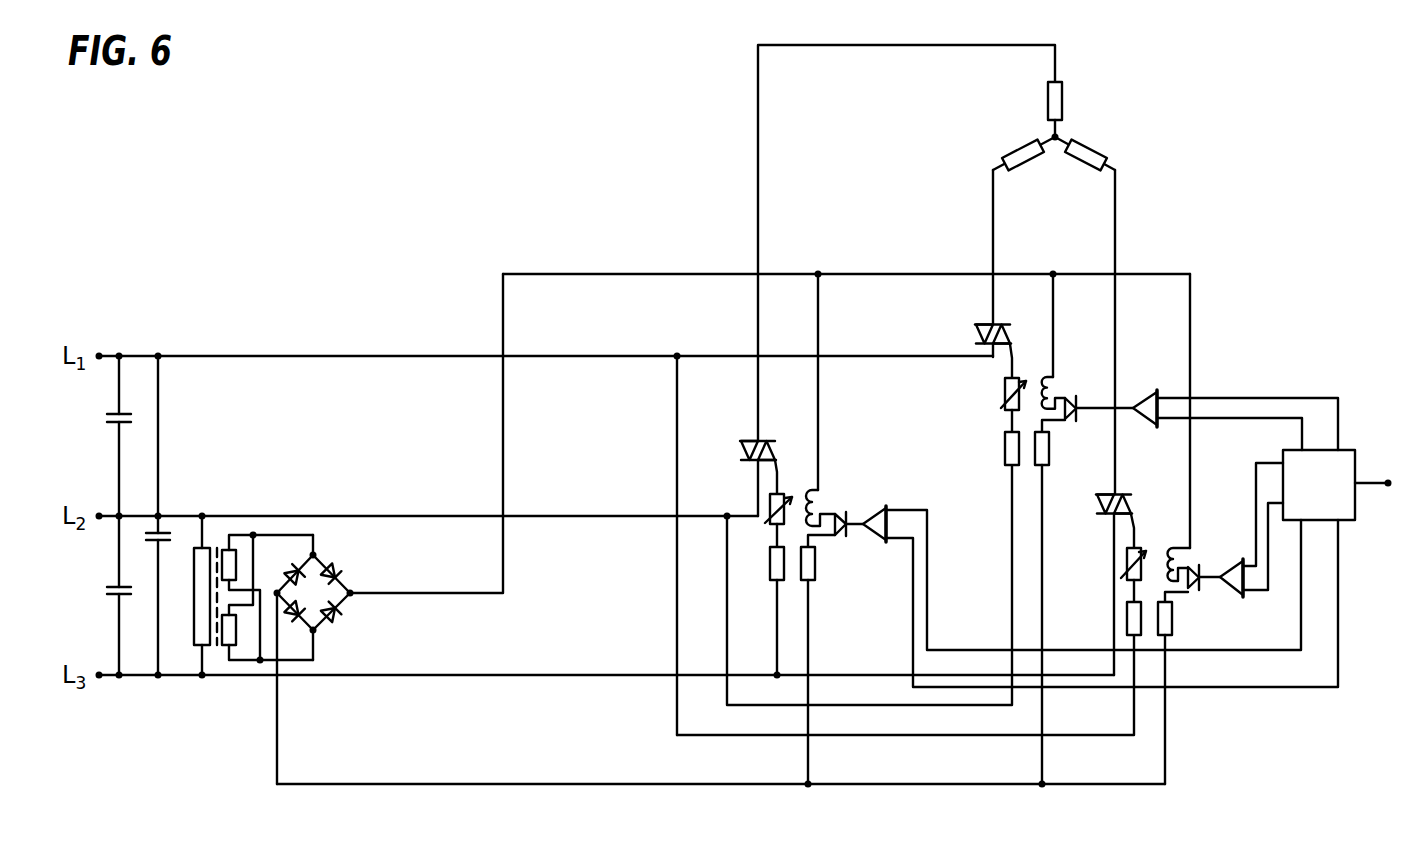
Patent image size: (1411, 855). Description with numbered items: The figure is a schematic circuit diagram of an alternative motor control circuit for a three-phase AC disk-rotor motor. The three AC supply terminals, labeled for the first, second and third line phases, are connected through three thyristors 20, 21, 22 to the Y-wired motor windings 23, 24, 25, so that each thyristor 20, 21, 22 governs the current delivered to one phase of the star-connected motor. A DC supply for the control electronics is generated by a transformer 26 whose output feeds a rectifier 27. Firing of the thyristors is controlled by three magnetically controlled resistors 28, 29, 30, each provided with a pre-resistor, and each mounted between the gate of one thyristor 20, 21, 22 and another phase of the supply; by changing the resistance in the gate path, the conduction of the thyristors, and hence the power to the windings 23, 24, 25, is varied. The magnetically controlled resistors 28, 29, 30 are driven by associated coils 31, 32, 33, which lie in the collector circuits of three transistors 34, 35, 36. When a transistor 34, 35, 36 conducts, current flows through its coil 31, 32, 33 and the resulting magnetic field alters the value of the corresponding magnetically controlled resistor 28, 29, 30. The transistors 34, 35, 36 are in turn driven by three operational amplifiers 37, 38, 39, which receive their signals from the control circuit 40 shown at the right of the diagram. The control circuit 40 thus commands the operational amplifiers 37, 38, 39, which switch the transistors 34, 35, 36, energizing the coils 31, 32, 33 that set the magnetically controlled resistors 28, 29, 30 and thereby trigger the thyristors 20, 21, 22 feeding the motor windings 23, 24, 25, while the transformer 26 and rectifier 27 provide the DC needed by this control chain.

The thyristor 20 is at (752, 438).
The thyristor 21 is at (987, 323).
The thyristor 22 is at (1120, 495).
The winding 23 is at (1020, 145).
The winding 24 is at (1063, 105).
The winding 25 is at (1092, 145).
The transformer 26 is at (214, 537).
The rectifier 27 is at (318, 605).
The magnetically controlled resistor 28 is at (770, 527).
The magnetically controlled resistor 29 is at (1003, 398).
The magnetically controlled resistor 30 is at (1125, 565).
The coil 31 is at (807, 508).
The coil 32 is at (1043, 392).
The coil 33 is at (1170, 558).
The transistor 34 is at (837, 535).
The transistor 35 is at (1066, 417).
The transistor 36 is at (1188, 588).
The operational amplifier 37 is at (878, 532).
The operational amplifier 38 is at (1148, 423).
The operational amplifier 39 is at (1228, 590).
The control circuit 40 is at (1305, 499).